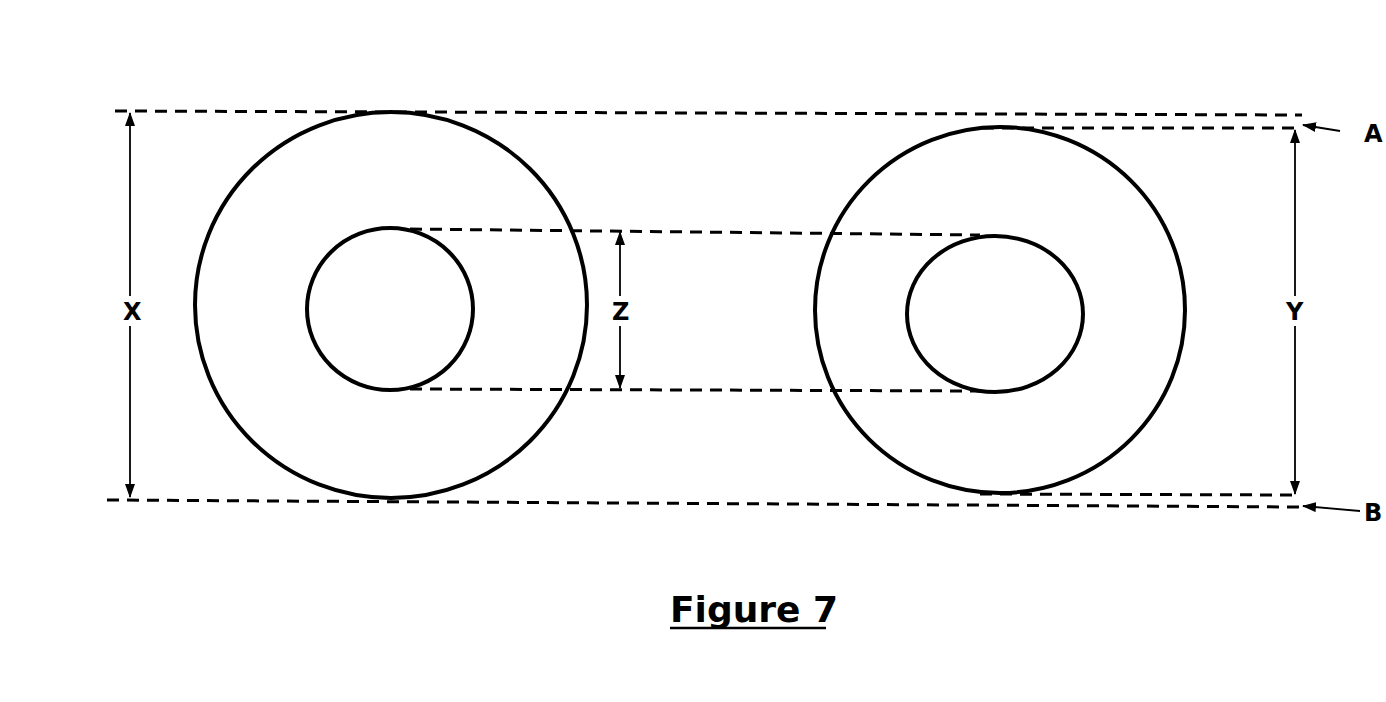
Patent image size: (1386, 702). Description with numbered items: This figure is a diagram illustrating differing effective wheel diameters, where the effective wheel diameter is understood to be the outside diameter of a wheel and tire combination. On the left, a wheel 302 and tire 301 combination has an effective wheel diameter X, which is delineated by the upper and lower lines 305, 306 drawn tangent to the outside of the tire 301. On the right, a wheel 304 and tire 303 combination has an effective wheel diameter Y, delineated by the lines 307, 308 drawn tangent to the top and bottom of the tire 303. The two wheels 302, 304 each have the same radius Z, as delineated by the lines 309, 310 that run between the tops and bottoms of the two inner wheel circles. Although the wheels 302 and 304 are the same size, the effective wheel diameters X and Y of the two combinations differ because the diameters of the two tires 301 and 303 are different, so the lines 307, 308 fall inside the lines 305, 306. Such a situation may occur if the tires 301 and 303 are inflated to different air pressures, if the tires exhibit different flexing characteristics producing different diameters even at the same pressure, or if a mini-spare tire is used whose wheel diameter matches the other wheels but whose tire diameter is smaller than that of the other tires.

The tire 301 is at (272, 148).
The wheel 302 is at (462, 262).
The tire 303 is at (825, 220).
The wheel 304 is at (1074, 273).
The line 305 is at (623, 110).
The line 306 is at (630, 505).
The line 307 is at (1262, 455).
The line 308 is at (1158, 134).
The line 309 is at (757, 388).
The line 310 is at (755, 235).